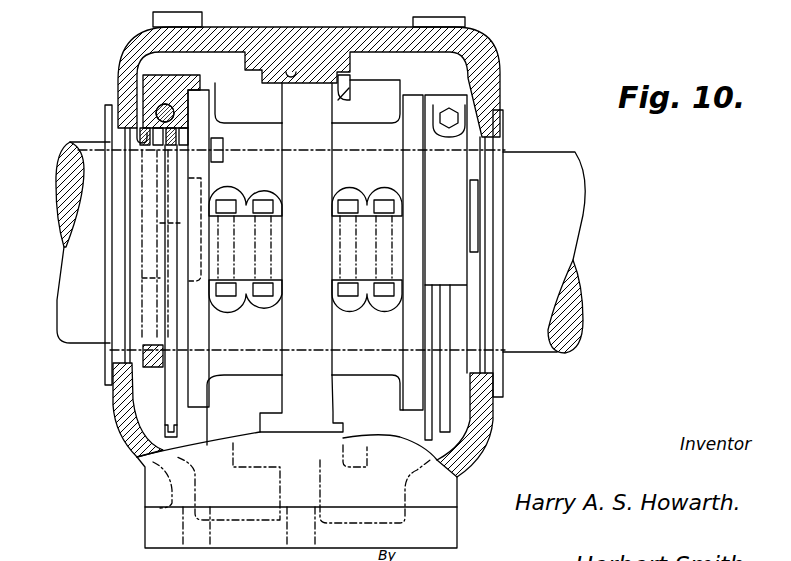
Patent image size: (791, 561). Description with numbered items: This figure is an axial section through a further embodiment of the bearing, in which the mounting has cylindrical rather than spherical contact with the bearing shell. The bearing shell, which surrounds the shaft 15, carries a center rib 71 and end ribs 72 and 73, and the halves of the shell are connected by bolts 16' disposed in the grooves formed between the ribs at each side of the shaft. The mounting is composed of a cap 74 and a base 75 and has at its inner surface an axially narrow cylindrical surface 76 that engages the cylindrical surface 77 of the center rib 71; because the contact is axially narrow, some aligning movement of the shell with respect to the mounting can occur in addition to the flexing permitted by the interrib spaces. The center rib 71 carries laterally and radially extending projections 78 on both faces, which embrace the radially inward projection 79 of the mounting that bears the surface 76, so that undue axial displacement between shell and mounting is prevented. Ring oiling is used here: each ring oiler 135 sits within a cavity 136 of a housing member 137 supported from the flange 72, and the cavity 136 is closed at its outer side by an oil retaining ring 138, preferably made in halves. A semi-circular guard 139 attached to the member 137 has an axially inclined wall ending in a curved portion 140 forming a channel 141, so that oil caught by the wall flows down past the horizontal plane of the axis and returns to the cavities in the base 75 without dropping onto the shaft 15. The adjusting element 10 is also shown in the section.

The adjusting plate 10 is at (382, 170).
The shaft 15 is at (537, 340).
The bolts 16' is at (337, 209).
The center rib 71 is at (308, 182).
The end rib 72 is at (203, 117).
The end rib 73 is at (410, 107).
The cap 74 is at (483, 60).
The base 75 is at (494, 432).
The cylindrical surface 76 is at (312, 98).
The cylindrical surface 77 is at (326, 97).
The projections 78 is at (346, 90).
The radially inward projection 79 is at (290, 71).
The ring oiler 135 is at (167, 397).
The cavity 136 is at (148, 124).
The housing member 137 is at (157, 83).
The oil retaining ring 138 is at (147, 358).
The semi-circular guard 139 is at (160, 110).
The curved portion 140 is at (247, 87).
The channel 141 is at (136, 133).